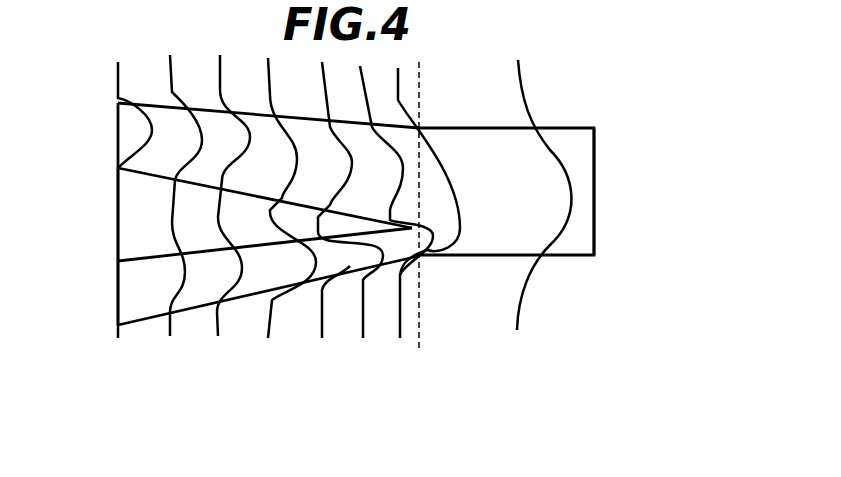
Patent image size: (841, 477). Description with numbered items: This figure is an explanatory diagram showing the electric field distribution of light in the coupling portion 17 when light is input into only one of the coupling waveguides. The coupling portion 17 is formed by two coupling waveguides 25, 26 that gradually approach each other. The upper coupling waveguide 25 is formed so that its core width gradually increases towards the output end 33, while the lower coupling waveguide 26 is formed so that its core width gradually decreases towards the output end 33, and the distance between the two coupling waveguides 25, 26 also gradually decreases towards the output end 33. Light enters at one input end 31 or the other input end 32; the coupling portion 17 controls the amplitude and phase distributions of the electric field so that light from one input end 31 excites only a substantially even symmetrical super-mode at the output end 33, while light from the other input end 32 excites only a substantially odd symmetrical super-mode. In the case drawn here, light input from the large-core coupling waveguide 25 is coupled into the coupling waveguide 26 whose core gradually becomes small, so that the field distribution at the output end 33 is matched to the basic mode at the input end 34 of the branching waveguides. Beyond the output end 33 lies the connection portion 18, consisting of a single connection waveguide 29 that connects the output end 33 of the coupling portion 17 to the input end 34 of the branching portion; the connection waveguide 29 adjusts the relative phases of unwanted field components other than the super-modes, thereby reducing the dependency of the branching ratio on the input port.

The coupling portion 17 is at (118, 372).
The connection portion 18 is at (590, 372).
The coupling waveguide 25 is at (274, 124).
The coupling waveguide 26 is at (198, 293).
The connection waveguide 29 is at (572, 135).
The input end 31 is at (117, 118).
The input end 32 is at (118, 302).
The output end 33 is at (420, 173).
The input end 34 is at (597, 187).